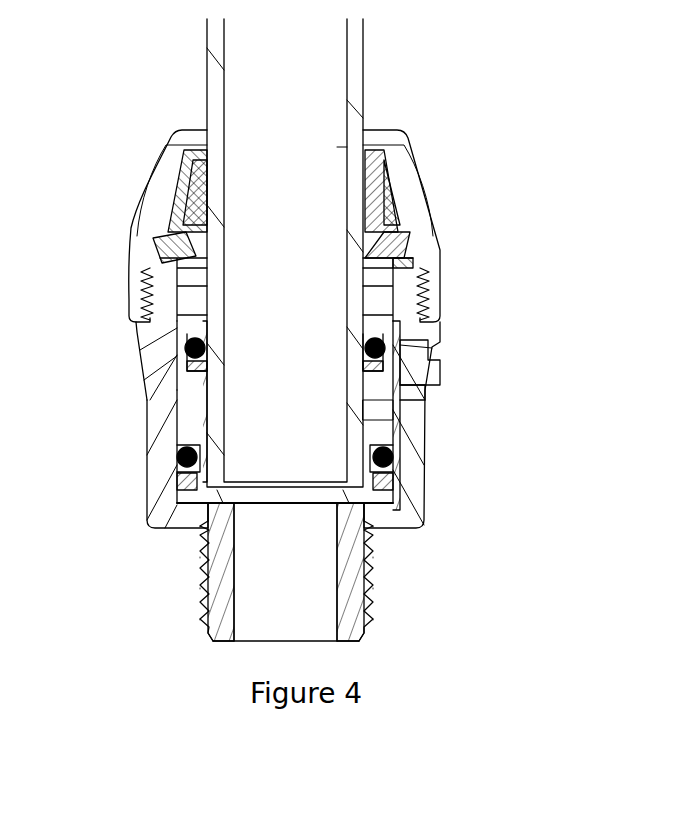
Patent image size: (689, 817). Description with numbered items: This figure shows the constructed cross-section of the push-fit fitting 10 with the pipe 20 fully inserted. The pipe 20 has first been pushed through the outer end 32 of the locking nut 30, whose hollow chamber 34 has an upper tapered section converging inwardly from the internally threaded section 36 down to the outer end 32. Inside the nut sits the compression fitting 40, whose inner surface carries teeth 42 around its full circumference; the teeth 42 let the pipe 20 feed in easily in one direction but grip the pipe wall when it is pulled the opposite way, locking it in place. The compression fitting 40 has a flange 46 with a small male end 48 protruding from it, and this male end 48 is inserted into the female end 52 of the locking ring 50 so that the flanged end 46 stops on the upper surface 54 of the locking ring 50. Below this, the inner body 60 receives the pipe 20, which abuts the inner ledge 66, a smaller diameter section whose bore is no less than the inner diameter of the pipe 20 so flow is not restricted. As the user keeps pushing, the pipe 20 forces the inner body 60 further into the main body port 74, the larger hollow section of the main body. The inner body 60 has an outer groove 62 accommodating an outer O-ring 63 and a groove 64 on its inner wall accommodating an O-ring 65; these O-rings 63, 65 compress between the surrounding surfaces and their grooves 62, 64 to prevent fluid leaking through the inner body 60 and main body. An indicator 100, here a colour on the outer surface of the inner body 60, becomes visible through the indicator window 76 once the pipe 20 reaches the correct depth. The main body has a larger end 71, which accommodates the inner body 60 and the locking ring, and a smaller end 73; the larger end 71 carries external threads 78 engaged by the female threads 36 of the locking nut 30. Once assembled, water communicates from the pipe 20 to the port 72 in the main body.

The push-fit fitting 10 is at (616, 256).
The pipe 20 is at (186, 45).
The locking nut 30 is at (153, 140).
The outer end 32 is at (353, 141).
The hollow chamber 34 is at (178, 190).
The inner threads 36 is at (168, 262).
The compression fitting 40 is at (405, 170).
The teeth 42 is at (399, 163).
The flange 46 is at (313, 200).
The male end 48 is at (313, 205).
The locking ring 50 is at (423, 254).
The female end 52 is at (440, 297).
The upper surface 54 is at (178, 212).
The inner body 60 is at (168, 327).
The outer groove 62 is at (180, 463).
The outer O-ring 63 is at (180, 463).
The inner groove 64 is at (146, 384).
The O-ring 65 is at (195, 345).
The inner ledge 66 is at (204, 565).
The larger end 71 is at (418, 394).
The port 72 is at (290, 568).
The smaller end 73 is at (374, 631).
The main body port 74 is at (360, 402).
The indicator window 76 is at (430, 368).
The external threads 78 is at (150, 298).
The indicator 100 is at (175, 382).